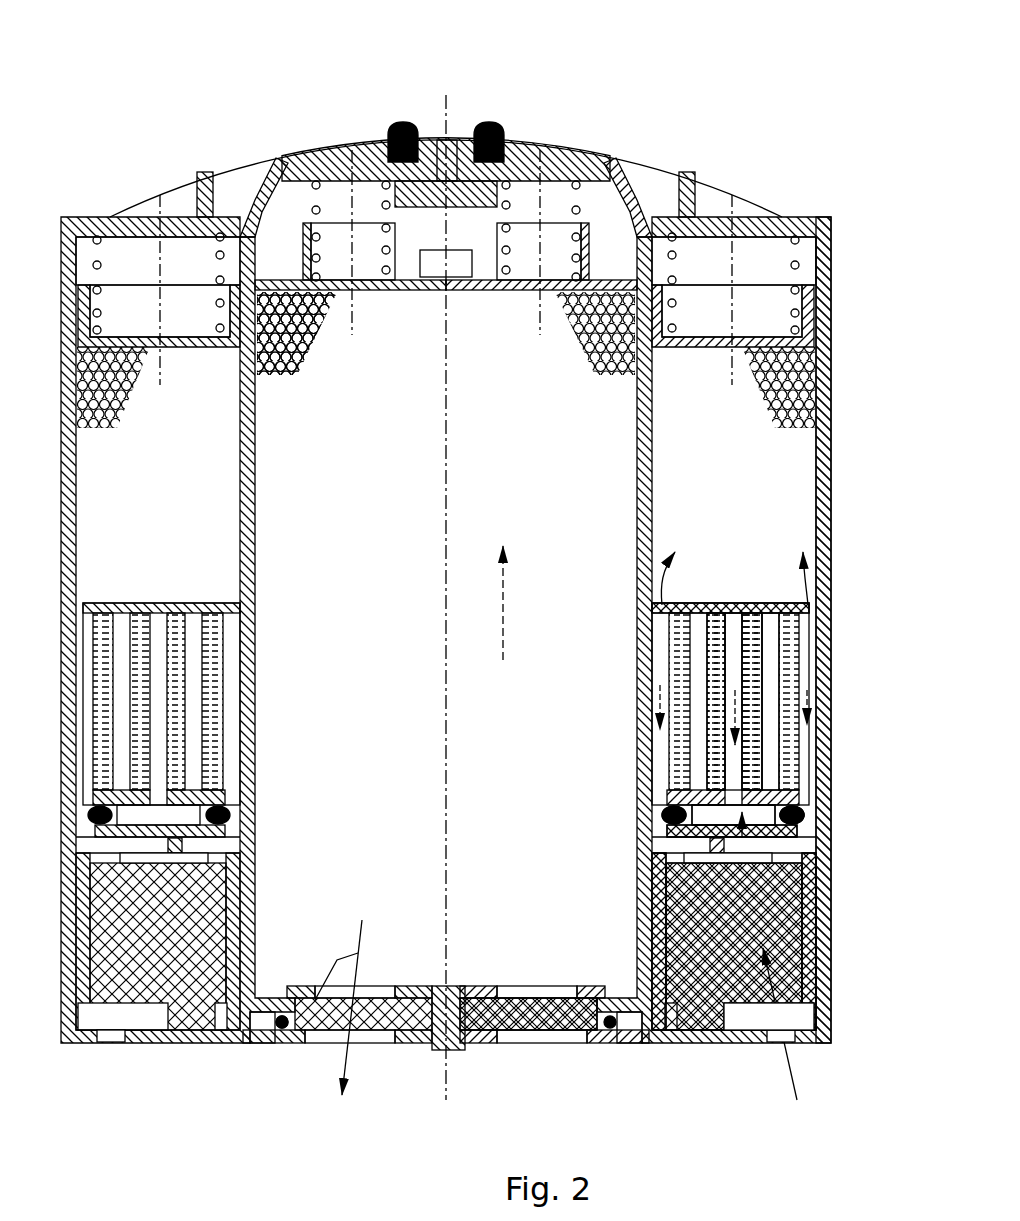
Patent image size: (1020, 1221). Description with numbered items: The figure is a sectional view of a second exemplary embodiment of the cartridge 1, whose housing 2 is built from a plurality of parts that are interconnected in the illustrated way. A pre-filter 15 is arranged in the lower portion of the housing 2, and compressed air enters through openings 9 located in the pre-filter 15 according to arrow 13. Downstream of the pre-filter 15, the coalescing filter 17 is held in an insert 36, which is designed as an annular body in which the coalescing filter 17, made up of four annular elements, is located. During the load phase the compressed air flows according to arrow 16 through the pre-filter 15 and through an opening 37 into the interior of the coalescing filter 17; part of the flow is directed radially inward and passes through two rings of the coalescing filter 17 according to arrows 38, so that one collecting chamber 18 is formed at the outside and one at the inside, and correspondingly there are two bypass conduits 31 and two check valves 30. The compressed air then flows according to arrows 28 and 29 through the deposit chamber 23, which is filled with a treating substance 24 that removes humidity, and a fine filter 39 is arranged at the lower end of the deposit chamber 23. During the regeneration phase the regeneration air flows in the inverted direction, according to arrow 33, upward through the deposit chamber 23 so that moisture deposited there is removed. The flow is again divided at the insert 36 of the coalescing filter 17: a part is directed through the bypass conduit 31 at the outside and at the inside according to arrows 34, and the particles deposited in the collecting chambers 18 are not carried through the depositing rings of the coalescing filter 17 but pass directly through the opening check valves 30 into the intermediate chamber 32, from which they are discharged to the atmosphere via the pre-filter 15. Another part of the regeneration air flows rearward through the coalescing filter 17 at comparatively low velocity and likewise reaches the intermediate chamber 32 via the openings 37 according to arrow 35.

The cartridge 1 is at (722, 150).
The housing 2 is at (802, 214).
The openings 9 is at (793, 1033).
The arrow 13 is at (768, 984).
The pre-filter 15 is at (782, 915).
The arrow 16 is at (762, 856).
The coalescing filter 17 is at (819, 662).
The collecting chamber 18 is at (737, 773).
The deposit chamber 23 is at (513, 383).
The treating substance 24 is at (290, 300).
The arrow 28 is at (546, 384).
The arrow 29 is at (286, 1025).
The check valve 30 is at (808, 822).
The bypass conduit 31 is at (805, 818).
The intermediate chamber 32 is at (742, 840).
The arrow 33 is at (505, 575).
The arrows 34 is at (815, 695).
The arrow 35 is at (737, 680).
The insert 36 is at (822, 597).
The opening 37 is at (762, 784).
The arrows 38 is at (663, 577).
The fine filter 39 is at (522, 1022).